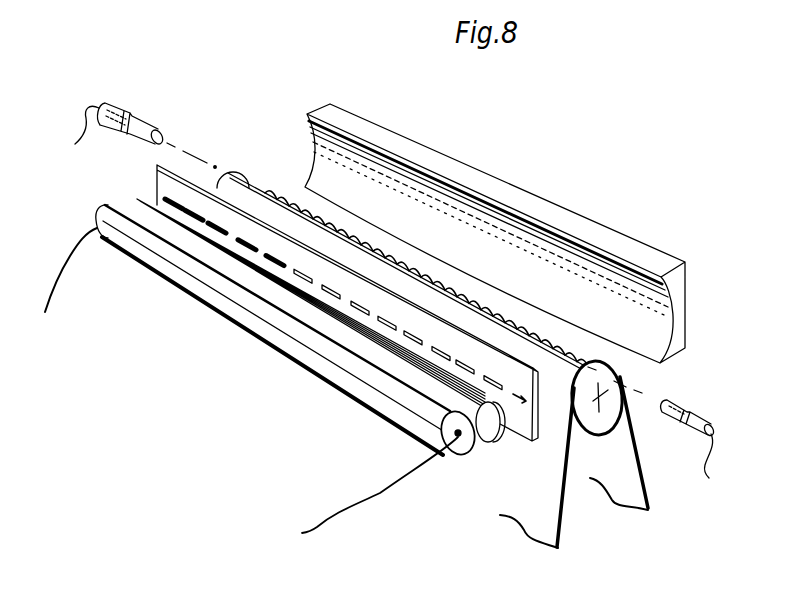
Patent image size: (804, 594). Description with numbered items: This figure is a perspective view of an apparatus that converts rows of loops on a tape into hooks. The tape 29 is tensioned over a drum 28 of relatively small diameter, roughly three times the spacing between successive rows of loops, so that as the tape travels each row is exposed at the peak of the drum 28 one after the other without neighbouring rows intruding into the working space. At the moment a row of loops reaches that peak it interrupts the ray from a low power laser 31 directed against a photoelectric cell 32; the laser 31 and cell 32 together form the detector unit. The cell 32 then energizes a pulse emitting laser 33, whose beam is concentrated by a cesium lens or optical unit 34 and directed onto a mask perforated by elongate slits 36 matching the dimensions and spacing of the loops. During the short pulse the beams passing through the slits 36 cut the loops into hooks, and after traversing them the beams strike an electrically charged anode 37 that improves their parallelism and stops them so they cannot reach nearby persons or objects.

The drum 28 is at (624, 382).
The tape 29 is at (537, 500).
The low power laser 31 is at (124, 109).
The photoelectric cell 32 is at (684, 421).
The pulse emitting laser 33 is at (180, 193).
The optical unit 34 is at (141, 211).
The elongate slits 36 is at (285, 267).
The electrically charged anode 37 is at (538, 207).